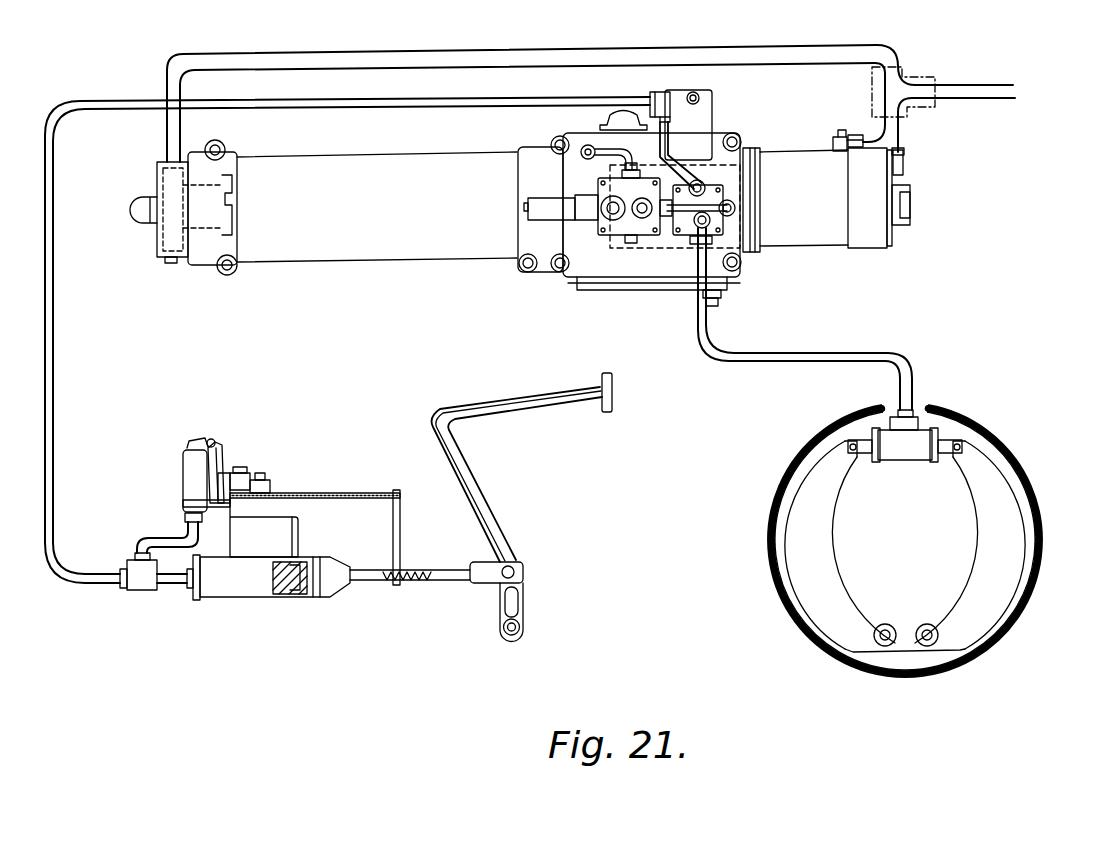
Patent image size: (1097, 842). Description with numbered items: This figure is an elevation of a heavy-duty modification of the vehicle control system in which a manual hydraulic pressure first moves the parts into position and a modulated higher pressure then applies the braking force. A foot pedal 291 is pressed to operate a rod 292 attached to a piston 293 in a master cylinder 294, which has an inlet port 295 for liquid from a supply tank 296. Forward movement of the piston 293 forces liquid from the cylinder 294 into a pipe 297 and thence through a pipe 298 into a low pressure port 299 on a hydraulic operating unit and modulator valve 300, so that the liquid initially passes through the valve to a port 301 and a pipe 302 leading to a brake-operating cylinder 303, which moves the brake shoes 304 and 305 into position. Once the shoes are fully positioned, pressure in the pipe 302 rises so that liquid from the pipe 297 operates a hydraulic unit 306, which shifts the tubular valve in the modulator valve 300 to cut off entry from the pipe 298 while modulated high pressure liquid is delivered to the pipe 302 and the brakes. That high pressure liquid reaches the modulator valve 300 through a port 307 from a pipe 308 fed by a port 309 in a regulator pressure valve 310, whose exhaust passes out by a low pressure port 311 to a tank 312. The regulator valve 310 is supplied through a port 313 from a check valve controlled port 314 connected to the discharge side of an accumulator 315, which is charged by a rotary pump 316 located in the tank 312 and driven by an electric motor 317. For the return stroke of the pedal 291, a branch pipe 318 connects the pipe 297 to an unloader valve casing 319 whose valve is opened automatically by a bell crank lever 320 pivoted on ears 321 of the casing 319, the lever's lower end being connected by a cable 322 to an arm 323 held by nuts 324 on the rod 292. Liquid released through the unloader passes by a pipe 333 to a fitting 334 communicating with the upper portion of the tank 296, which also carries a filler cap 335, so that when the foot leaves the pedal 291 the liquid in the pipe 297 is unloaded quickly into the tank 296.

The foot pedal 291 is at (557, 398).
The rod 292 is at (427, 580).
The piston 293 is at (303, 590).
The master cylinder 294 is at (240, 587).
The inlet port 295 is at (305, 562).
The supply tank 296 is at (278, 527).
The pipe 297 is at (54, 352).
The pipe 298 is at (667, 138).
The low pressure port 299 is at (702, 190).
The hydraulic operating unit and modulator valve 300 is at (690, 242).
The port 301 is at (726, 282).
The pipe 302 is at (772, 362).
The brake-operating cylinder 303 is at (915, 440).
The brake shoe 304 is at (808, 502).
The brake shoe 305 is at (988, 473).
The hydraulic unit 306 is at (708, 95).
The port 307 is at (733, 212).
The pipe 308 is at (667, 233).
The port 309 is at (633, 230).
The regulator pressure valve 310 is at (603, 220).
The low pressure port 311 is at (598, 205).
The tank 312 is at (562, 140).
The port 313 is at (620, 190).
The check valve controlled port 314 is at (596, 147).
The accumulator 315 is at (378, 248).
The rotary pump 316 is at (750, 148).
The electric motor 317 is at (870, 237).
The branch pipe 318 is at (158, 538).
The unloader valve casing 319 is at (183, 468).
The bell crank lever 320 is at (222, 447).
The ears 321 is at (207, 443).
The cable 322 is at (372, 494).
The arm 323 is at (401, 516).
The nuts 324 is at (407, 567).
The pipe 333 is at (237, 473).
The fitting 334 is at (263, 483).
The filler cap 335 is at (268, 487).